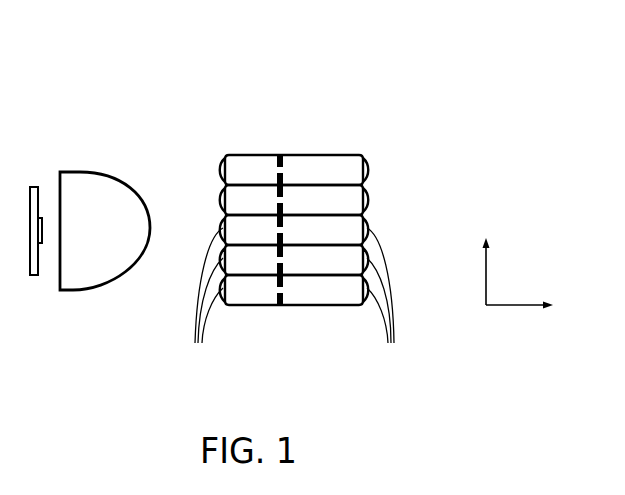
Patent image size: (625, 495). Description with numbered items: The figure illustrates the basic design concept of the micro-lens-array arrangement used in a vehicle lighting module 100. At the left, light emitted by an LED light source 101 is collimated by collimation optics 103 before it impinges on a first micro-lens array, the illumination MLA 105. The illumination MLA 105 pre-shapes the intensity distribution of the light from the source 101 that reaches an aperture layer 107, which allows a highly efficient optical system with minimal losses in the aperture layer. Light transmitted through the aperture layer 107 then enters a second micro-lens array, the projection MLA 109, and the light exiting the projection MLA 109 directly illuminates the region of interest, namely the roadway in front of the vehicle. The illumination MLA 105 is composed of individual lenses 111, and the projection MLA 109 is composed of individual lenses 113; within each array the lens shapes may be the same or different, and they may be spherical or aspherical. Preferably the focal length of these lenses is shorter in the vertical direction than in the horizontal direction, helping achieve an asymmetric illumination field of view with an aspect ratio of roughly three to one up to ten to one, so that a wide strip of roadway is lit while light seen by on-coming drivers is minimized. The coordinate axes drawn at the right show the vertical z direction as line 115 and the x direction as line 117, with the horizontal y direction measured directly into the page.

The lighting module 100 is at (450, 97).
The LED light source 101 is at (42, 230).
The collimation optics 103 is at (112, 192).
The illumination MLA 105 is at (252, 140).
The aperture layer 107 is at (283, 140).
The projection MLA 109 is at (333, 140).
The individual lenses of MLA 105 111 is at (200, 299).
The individual lenses of MLA 109 113 is at (388, 299).
The z direction line 115 is at (486, 275).
The x direction line 117 is at (513, 305).